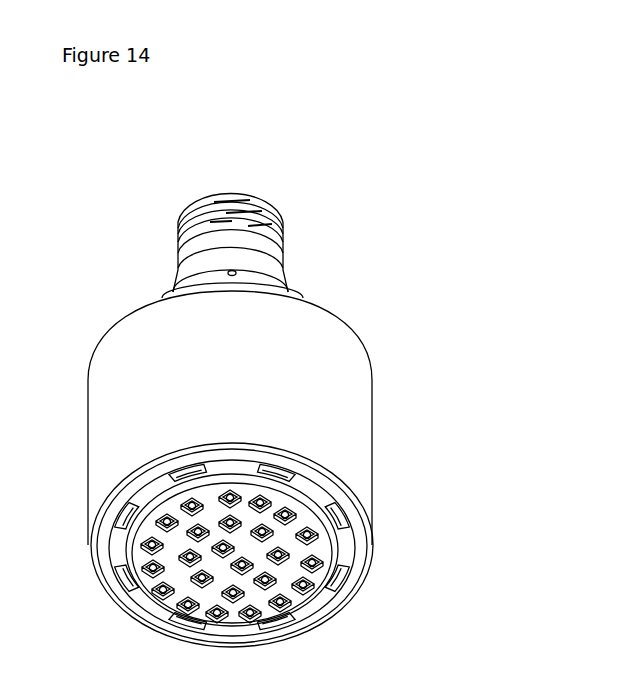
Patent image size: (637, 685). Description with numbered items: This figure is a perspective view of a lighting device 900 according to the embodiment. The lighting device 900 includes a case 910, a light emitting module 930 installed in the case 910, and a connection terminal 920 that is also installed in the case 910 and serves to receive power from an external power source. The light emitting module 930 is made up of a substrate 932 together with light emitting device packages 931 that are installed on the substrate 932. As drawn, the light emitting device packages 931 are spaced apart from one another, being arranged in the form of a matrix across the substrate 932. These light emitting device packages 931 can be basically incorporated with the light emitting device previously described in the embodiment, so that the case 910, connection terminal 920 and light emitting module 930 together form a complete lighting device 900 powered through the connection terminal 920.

The lighting device 900 is at (57, 180).
The case 910 is at (360, 378).
The connection terminal 920 is at (178, 238).
The light emitting module 930 is at (427, 532).
The light emitting device packages 931 is at (312, 537).
The substrate 932 is at (318, 572).